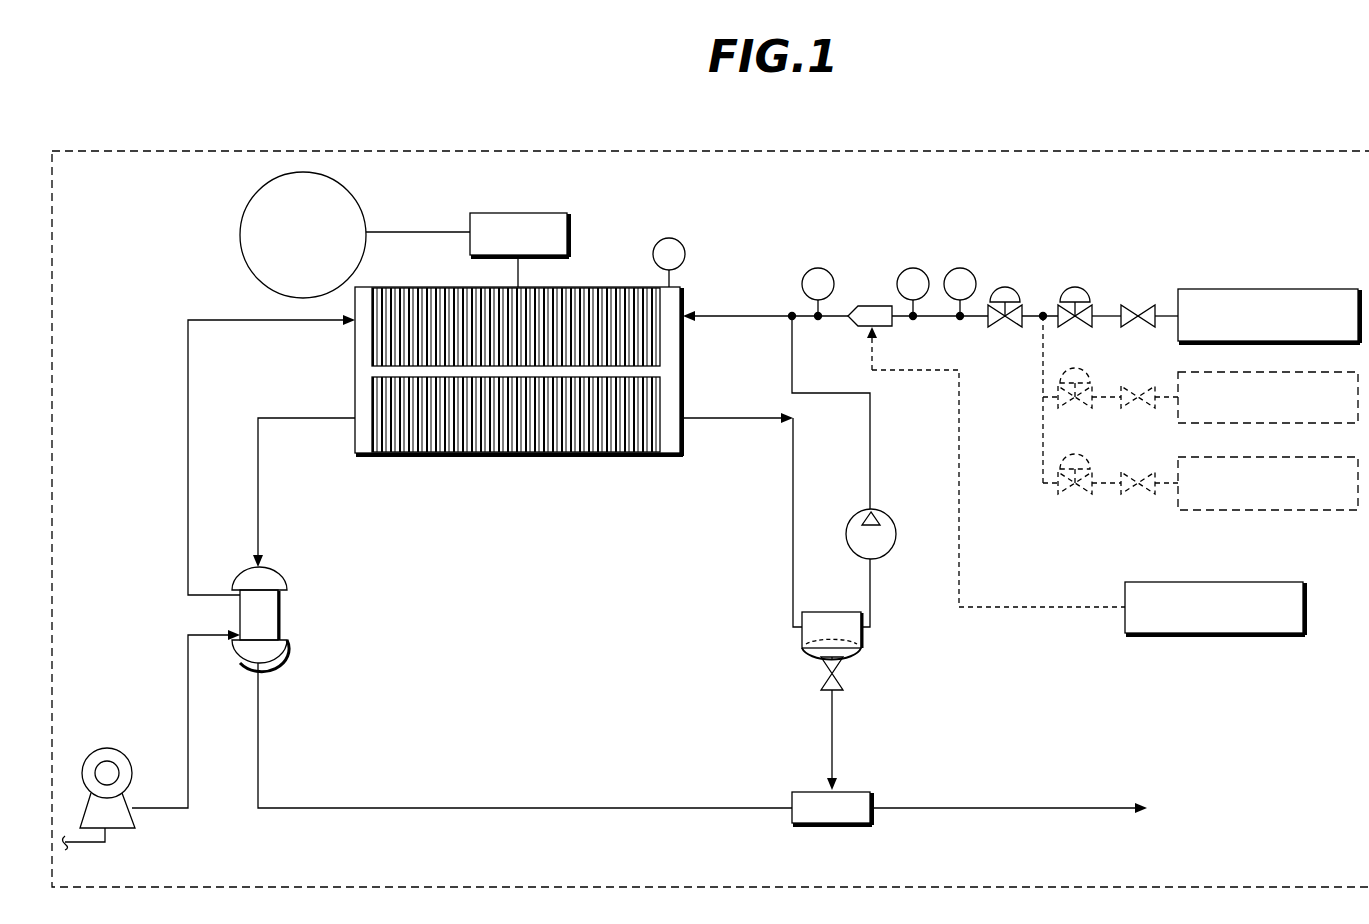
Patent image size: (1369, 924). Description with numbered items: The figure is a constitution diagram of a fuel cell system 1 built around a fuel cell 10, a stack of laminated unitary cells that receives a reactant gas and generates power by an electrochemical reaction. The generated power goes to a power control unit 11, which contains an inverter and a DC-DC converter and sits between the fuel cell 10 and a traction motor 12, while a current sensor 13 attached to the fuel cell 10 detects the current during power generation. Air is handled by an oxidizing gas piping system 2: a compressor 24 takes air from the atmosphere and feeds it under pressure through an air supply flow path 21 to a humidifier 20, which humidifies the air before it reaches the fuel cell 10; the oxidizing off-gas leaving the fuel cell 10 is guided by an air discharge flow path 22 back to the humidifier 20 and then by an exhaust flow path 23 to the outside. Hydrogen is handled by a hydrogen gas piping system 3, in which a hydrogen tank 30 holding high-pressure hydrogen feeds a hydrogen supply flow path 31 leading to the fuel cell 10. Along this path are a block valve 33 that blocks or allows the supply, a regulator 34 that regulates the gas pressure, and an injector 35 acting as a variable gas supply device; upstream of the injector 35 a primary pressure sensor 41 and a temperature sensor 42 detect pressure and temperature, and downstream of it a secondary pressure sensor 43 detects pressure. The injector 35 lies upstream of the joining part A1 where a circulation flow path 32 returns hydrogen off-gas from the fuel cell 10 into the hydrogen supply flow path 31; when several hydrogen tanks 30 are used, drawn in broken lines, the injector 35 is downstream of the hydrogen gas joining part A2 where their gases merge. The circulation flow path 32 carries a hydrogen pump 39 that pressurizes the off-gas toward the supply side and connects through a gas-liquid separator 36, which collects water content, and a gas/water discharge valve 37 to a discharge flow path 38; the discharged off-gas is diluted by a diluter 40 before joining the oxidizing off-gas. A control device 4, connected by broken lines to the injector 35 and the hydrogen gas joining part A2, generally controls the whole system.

The fuel cell system 1 is at (512, 148).
The oxidizing gas piping system 2 is at (303, 568).
The hydrogen gas piping system 3 is at (772, 613).
The control device 4 is at (1210, 582).
The fuel cell 10 is at (624, 457).
The power control unit (PCU) 11 is at (570, 234).
The traction motor 12 is at (241, 242).
The current sensor 13 is at (674, 240).
The humidifier 20 is at (284, 626).
The air supply flow path 21 is at (188, 540).
The air discharge flow path 22 is at (259, 522).
The exhaust flow path 23 is at (722, 808).
The compressor 24 is at (112, 750).
The hydrogen tank 30 is at (1302, 290).
The hydrogen supply flow path 31 is at (742, 316).
The circulation flow path 32 is at (793, 573).
The block valve 33 is at (1138, 305).
The regulator 34 is at (1005, 286).
The injector 35 is at (862, 306).
The gas-liquid separator 36 is at (813, 612).
The gas/water discharge valve 37 is at (818, 679).
The discharge flow path 38 is at (834, 745).
The hydrogen pump 39 is at (859, 512).
The diluter 40 is at (874, 797).
The primary pressure sensor 41 is at (917, 268).
The temperature sensor 42 is at (964, 268).
The secondary pressure sensor 43 is at (821, 268).
The joining part A1 is at (790, 320).
The hydrogen gas joining part A2 is at (1043, 320).